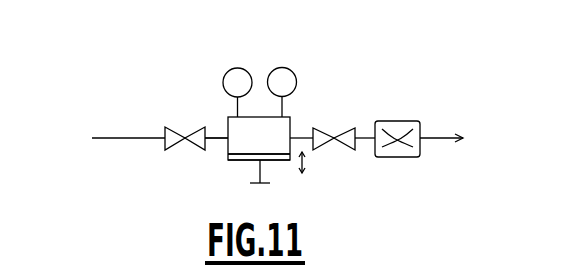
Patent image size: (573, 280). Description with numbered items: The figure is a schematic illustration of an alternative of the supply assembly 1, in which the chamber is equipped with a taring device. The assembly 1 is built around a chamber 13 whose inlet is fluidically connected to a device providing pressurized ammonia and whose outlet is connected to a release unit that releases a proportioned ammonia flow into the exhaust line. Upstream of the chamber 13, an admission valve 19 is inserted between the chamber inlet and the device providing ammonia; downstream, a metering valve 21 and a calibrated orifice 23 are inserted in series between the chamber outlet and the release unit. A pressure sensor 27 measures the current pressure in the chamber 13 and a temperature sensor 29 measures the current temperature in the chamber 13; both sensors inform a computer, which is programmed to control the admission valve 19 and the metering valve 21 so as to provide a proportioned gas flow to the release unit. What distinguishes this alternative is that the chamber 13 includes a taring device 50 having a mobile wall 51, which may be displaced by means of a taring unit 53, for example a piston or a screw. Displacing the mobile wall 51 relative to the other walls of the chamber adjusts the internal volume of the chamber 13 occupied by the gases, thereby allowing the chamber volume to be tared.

The assembly 1 is at (99, 90).
The chamber 13 is at (290, 118).
The admission valve 19 is at (183, 128).
The metering valve 21 is at (335, 135).
The calibrated orifice 23 is at (397, 121).
The pressure sensor 27 is at (223, 90).
The temperature sensor 29 is at (297, 82).
The taring device 50 is at (204, 161).
The mobile wall 51 is at (240, 160).
The taring unit 53 is at (263, 172).